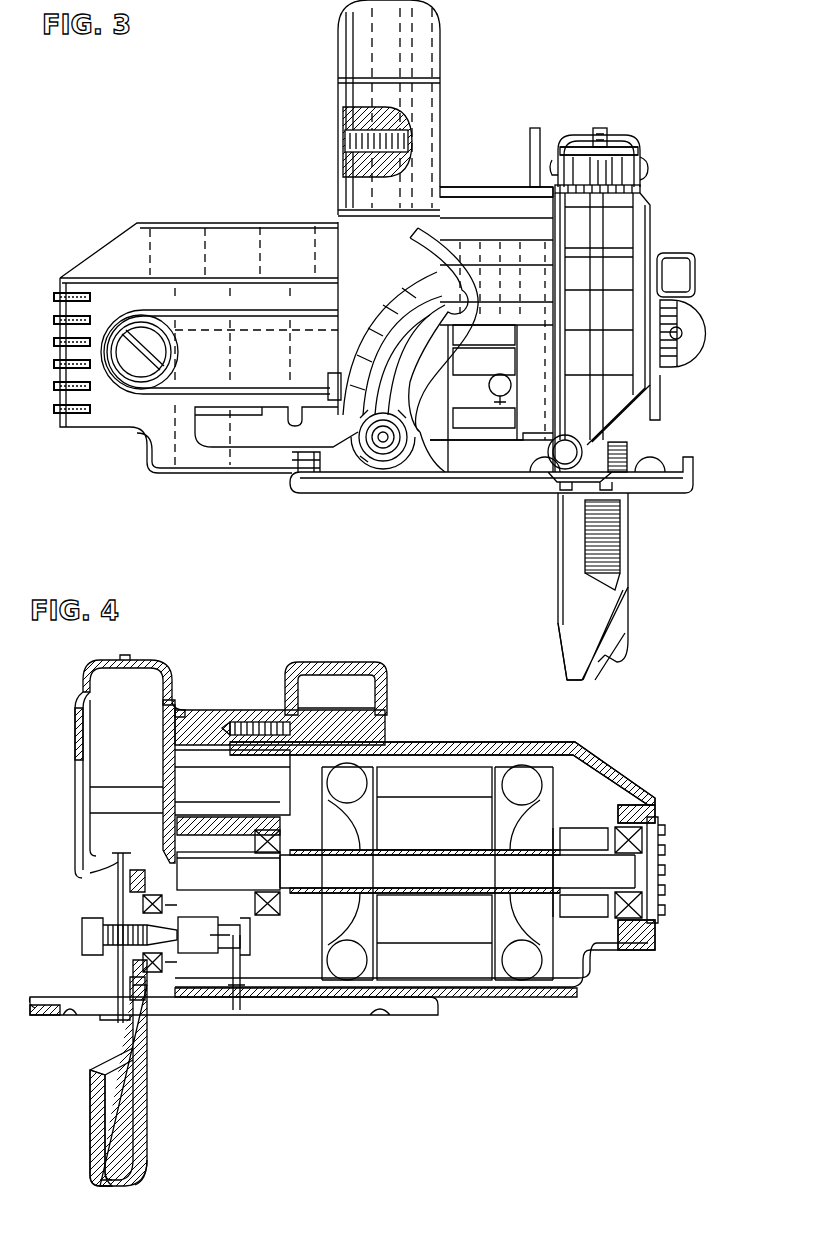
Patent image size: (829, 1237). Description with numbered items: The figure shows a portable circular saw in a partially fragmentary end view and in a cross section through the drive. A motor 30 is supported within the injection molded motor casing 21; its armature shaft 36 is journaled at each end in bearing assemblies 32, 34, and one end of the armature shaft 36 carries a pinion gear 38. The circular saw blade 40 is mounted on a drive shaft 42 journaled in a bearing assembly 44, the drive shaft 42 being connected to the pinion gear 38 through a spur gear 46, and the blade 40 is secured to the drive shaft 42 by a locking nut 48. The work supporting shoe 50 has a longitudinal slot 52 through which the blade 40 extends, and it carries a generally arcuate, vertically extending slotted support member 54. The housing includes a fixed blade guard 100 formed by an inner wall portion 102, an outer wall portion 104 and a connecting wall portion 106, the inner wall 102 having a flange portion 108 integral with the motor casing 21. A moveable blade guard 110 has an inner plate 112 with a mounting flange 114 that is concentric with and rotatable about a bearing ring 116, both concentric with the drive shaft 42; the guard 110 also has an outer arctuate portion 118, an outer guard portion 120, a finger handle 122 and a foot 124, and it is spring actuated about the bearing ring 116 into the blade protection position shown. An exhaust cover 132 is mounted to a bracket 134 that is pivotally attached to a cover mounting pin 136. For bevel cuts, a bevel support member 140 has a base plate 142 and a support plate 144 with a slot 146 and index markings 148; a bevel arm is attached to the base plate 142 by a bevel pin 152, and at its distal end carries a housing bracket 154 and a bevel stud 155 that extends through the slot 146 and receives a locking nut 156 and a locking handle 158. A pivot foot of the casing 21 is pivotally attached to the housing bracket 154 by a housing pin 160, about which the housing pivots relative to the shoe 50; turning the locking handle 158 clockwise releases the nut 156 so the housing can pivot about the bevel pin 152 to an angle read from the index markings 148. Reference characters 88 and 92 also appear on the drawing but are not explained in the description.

In FIG. 3, the motor casing 21 is at (250, 222).
In FIG. 4, the motor casing 21 is at (602, 762).
In FIG. 4, the motor 30 is at (443, 840).
In FIG. 4, the bearing assembly 32 is at (655, 822).
In FIG. 4, the bearing assembly 34 is at (270, 826).
In FIG. 4, the armature shaft 36 is at (403, 880).
In FIG. 4, the pinion gear 38 is at (231, 884).
In FIG. 4, the circular saw blade 40 is at (118, 870).
In FIG. 4, the drive shaft 42 is at (213, 947).
In FIG. 4, the bearing assembly 44 is at (238, 943).
In FIG. 4, the spur gear 46 is at (207, 913).
In FIG. 4, the locking nut 48 is at (92, 942).
In FIG. 3, the work supporting shoe 50 is at (509, 476).
In FIG. 4, the work supporting shoe 50 is at (62, 1018).
In FIG. 4, the longitudinal slot 52 is at (128, 1016).
In FIG. 3, the slotted support member 54 is at (530, 139).
In FIG. 3, the adjustment knob 88 is at (680, 328).
In FIG. 3, the air flow 92 is at (430, 319).
In FIG. 3, the fixed blade guard 100 is at (600, 130).
In FIG. 4, the fixed blade guard 100 is at (125, 656).
In FIG. 3, the inner wall portion 102 is at (555, 168).
In FIG. 4, the inner wall portion 102 is at (173, 687).
In FIG. 3, the outer wall portion 104 is at (650, 228).
In FIG. 4, the outer wall portion 104 is at (80, 707).
In FIG. 3, the connecting wall portion 106 is at (620, 136).
In FIG. 4, the connecting wall portion 106 is at (110, 662).
In FIG. 3, the flange portion 108 is at (510, 185).
In FIG. 4, the flange portion 108 is at (252, 708).
In FIG. 3, the moveable blade guard 110 is at (560, 668).
In FIG. 4, the moveable blade guard 110 is at (150, 1168).
In FIG. 3, the inner plate 112 is at (560, 591).
In FIG. 4, the inner plate 112 is at (148, 1107).
In FIG. 4, the mounting flange 114 is at (148, 890).
In FIG. 4, the bearing ring 116 is at (150, 1007).
In FIG. 3, the outer arctuate portion 118 is at (598, 662).
In FIG. 4, the outer arctuate portion 118 is at (110, 1194).
In FIG. 3, the outer guard portion 120 is at (622, 630).
In FIG. 4, the outer guard portion 120 is at (95, 1136).
In FIG. 3, the finger handle 122 is at (678, 270).
In FIG. 3, the foot 124 is at (578, 683).
In FIG. 3, the exhaust cover 132 is at (642, 190).
In FIG. 3, the bracket 134 is at (623, 172).
In FIG. 3, the cover mounting pin 136 is at (648, 164).
In FIG. 3, the bevel support member 140 is at (420, 352).
In FIG. 3, the base plate 142 is at (496, 465).
In FIG. 3, the support plate 144 is at (430, 288).
In FIG. 3, the slot 146 is at (420, 338).
In FIG. 3, the index markings 148 is at (433, 302).
In FIG. 3, the bevel pin 152 is at (598, 438).
In FIG. 3, the housing bracket 154 is at (428, 445).
In FIG. 3, the bevel stud 155 is at (392, 455).
In FIG. 3, the locking nut 156 is at (378, 446).
In FIG. 3, the locking handle 158 is at (225, 430).
In FIG. 3, the housing pin 160 is at (330, 390).